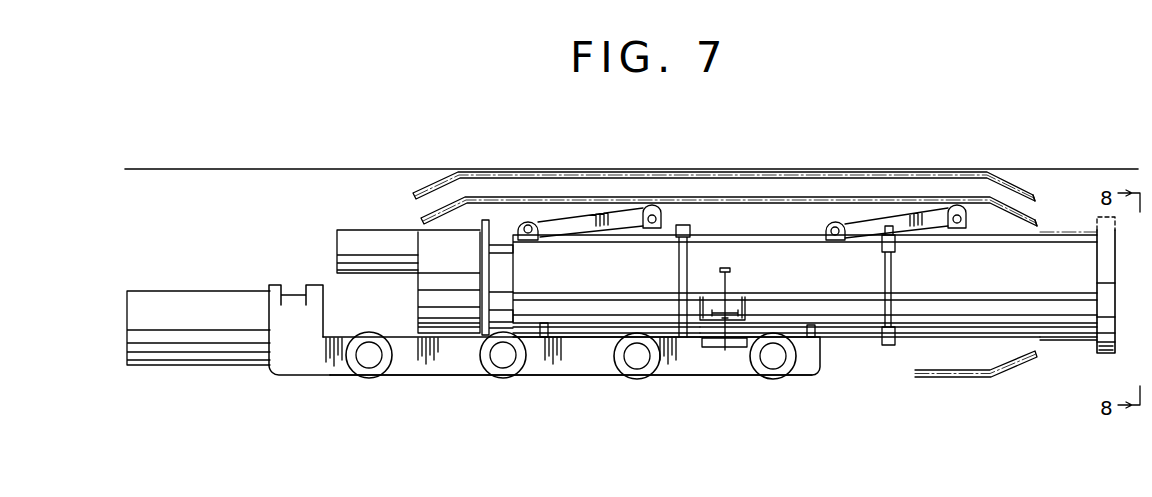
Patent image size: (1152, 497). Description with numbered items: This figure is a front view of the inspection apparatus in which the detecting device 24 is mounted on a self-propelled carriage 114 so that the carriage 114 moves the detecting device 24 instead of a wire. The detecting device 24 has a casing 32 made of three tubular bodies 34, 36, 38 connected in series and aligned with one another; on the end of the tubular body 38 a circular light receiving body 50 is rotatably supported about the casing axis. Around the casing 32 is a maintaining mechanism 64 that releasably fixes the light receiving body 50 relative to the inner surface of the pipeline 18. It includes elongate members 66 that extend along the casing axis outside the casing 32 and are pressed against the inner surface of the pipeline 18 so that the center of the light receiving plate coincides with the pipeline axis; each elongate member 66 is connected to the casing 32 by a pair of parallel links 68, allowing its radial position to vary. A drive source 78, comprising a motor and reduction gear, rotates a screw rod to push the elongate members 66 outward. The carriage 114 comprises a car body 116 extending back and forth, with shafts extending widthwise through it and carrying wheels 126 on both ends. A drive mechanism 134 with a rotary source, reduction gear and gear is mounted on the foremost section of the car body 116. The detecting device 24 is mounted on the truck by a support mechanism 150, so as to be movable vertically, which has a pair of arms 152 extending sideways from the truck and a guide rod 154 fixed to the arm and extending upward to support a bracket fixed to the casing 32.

The pipeline 18 is at (1056, 172).
The detecting device 24 is at (1043, 209).
The casing 32 is at (729, 237).
The tubular body 34 is at (596, 326).
The tubular body 36 is at (852, 331).
The tubular body 38 is at (1072, 341).
The light receiving body 50 is at (1124, 291).
The maintaining mechanism 64 is at (401, 224).
The elongate member 66 is at (905, 203).
The parallel link 68 is at (850, 222).
The drive source 78 is at (353, 242).
The self-propelled carriage 114 is at (545, 386).
The car body 116 is at (678, 366).
The wheel 126 is at (375, 373).
The drive mechanism 134 is at (312, 386).
The support mechanism 150 is at (750, 301).
The arm 152 is at (716, 348).
The guide rod 154 is at (728, 278).